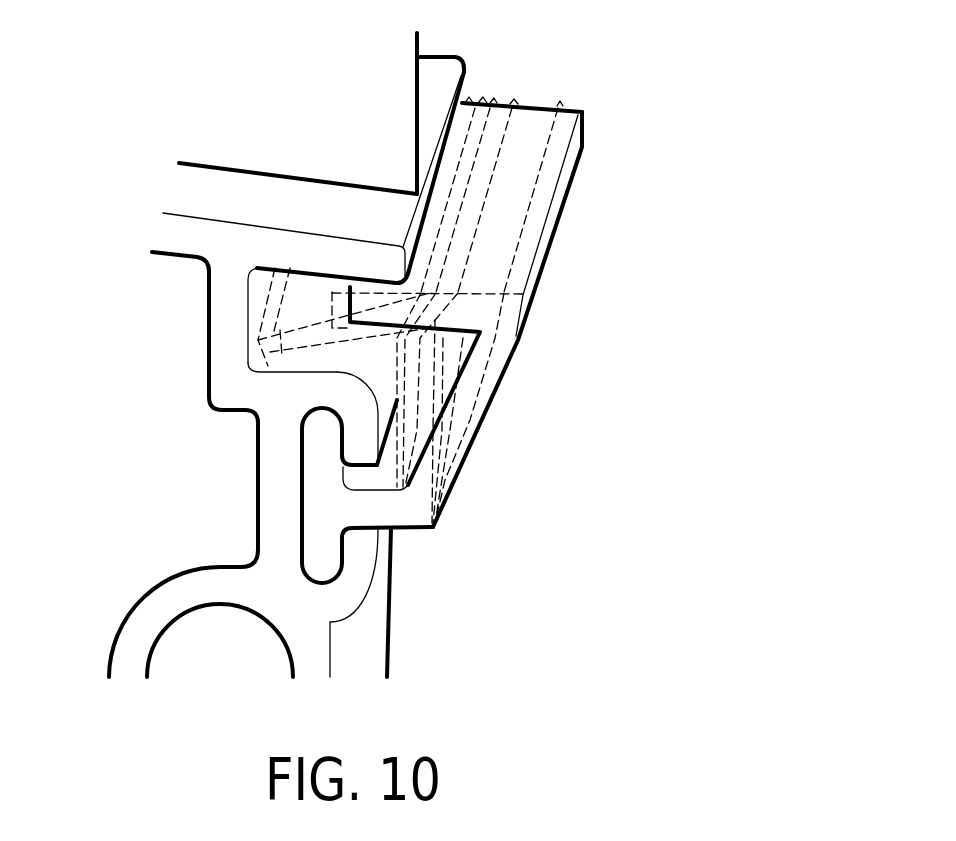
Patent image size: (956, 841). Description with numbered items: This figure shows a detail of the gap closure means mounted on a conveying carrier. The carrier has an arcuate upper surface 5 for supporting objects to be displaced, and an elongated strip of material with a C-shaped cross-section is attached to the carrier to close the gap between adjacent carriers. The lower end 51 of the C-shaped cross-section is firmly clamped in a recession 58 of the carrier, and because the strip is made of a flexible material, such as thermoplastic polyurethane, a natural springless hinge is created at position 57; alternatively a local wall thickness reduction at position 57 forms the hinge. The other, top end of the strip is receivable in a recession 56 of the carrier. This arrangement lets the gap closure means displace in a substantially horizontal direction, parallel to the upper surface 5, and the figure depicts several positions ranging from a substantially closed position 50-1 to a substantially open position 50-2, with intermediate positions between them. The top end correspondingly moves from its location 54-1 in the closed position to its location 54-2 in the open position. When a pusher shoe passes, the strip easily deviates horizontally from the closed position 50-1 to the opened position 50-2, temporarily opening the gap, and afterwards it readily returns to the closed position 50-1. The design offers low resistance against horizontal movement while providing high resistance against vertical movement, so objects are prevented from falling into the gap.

The arcuate upper surface 5 is at (300, 206).
The substantially closed position 50-1 is at (541, 255).
The substantially open position 50-2 is at (465, 102).
The lower end of the C-shaped cross-section 51 is at (330, 548).
The top end in closed position 54-1 is at (456, 328).
The top end in open position 54-2 is at (263, 353).
The recession of the carrier 56 is at (273, 292).
The hinge position 57 is at (462, 474).
The recession of carrier 58 is at (348, 591).